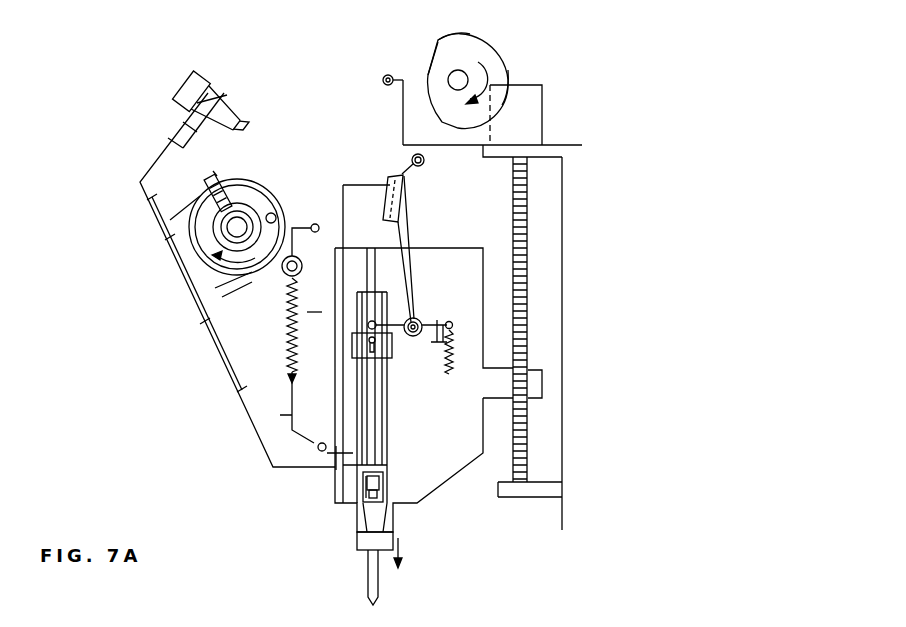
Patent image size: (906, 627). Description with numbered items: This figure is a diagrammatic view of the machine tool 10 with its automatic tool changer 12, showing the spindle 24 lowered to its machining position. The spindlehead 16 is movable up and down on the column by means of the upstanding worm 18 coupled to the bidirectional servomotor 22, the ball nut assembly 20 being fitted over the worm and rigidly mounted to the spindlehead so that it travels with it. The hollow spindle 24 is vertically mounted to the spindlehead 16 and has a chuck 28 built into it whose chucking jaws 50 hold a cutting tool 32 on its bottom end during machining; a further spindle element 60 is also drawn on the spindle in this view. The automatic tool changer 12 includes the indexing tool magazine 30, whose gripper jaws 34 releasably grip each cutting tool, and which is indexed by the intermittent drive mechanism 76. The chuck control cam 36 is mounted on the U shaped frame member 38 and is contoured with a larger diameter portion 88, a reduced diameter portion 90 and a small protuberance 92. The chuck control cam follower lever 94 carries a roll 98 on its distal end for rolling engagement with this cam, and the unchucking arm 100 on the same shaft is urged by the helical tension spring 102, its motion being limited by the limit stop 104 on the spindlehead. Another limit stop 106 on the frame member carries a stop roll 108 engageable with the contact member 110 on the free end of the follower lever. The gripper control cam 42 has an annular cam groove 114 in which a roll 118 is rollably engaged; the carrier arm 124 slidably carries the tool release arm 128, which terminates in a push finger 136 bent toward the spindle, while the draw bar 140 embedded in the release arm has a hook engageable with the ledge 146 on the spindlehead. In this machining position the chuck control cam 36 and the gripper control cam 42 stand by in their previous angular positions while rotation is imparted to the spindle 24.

The machine tool 10 is at (592, 132).
The automatic tool changer 12 is at (249, 84).
The spindlehead 16 is at (460, 460).
The worm 18 is at (512, 233).
The ball nut assembly 20 is at (542, 383).
The bidirectional servomotor 22 is at (537, 106).
The spindle 24 is at (394, 512).
The chuck 28 is at (383, 486).
The tool magazine 30 is at (150, 170).
The cutting tool 32 is at (380, 582).
The gripper jaws 34 is at (195, 122).
The chuck control cam 36 is at (486, 34).
The frame member 38 is at (463, 148).
The gripper control cam 42 is at (258, 180).
The chucking jaws 50 is at (366, 480).
The spindle sleeve 60 is at (392, 345).
The intermittent drive mechanism 76 is at (210, 200).
The larger diameter portion 88 is at (506, 64).
The reduced diameter portion 90 is at (436, 43).
The protuberance 92 is at (426, 80).
The chuck control cam follower lever 94 is at (410, 282).
The roll 98 is at (422, 165).
The unchucking arm 100 is at (415, 318).
The helical tension spring 102 is at (448, 378).
The limit stop 104 is at (432, 344).
The limit stop 106 is at (402, 108).
The stop roll 108 is at (383, 80).
The contact member 110 is at (391, 177).
The cam groove 114 is at (272, 250).
The roll 118 is at (275, 214).
The carrier arm 124 is at (289, 340).
The tool release arm 128 is at (282, 415).
The push finger 136 is at (320, 452).
The draw bar 140 is at (302, 224).
The ledge 146 is at (322, 312).